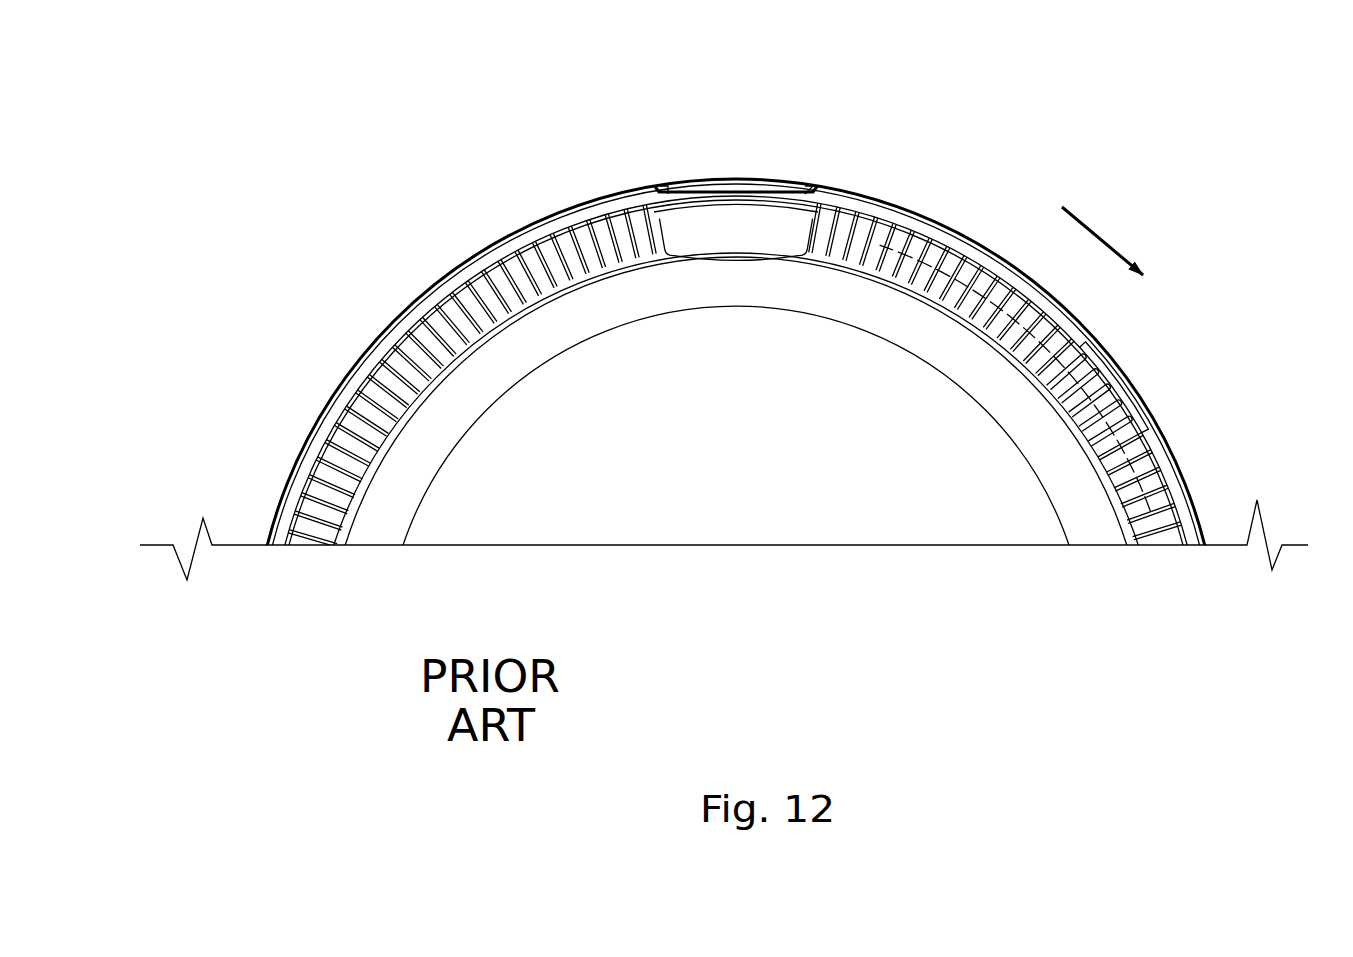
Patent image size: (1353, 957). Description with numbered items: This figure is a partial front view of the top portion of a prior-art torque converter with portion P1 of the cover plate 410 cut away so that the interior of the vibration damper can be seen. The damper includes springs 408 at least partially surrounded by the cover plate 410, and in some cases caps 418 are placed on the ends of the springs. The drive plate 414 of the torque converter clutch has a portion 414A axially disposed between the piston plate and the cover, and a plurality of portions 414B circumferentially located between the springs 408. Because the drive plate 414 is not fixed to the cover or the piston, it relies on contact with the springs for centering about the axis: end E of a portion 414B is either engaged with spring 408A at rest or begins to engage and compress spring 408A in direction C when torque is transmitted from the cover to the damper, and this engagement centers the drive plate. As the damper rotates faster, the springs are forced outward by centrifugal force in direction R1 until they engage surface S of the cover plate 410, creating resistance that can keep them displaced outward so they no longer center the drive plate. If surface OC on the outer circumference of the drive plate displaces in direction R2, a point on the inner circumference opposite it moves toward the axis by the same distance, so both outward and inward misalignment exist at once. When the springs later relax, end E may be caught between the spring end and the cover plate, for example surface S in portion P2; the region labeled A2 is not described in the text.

The springs 408 is at (440, 323).
The spring 408A is at (907, 237).
The cover plate 410 is at (1007, 253).
The drive plate 414 is at (405, 403).
The portion of the drive plate 414A is at (523, 353).
The portions of the drive plate 414B is at (733, 227).
The caps 418 is at (665, 191).
The surface on the outer circumference of the drive plate OC is at (653, 223).
The end of portion 414B E is at (803, 227).
The portion P2 is at (806, 182).
The portion of a cover plate P1 is at (1163, 395).
The direction C is at (1097, 222).
The surface of the cover plate S is at (1093, 347).
The area A2 is at (1147, 440).
The direction R1 is at (1035, 395).
The direction R2 is at (735, 258).